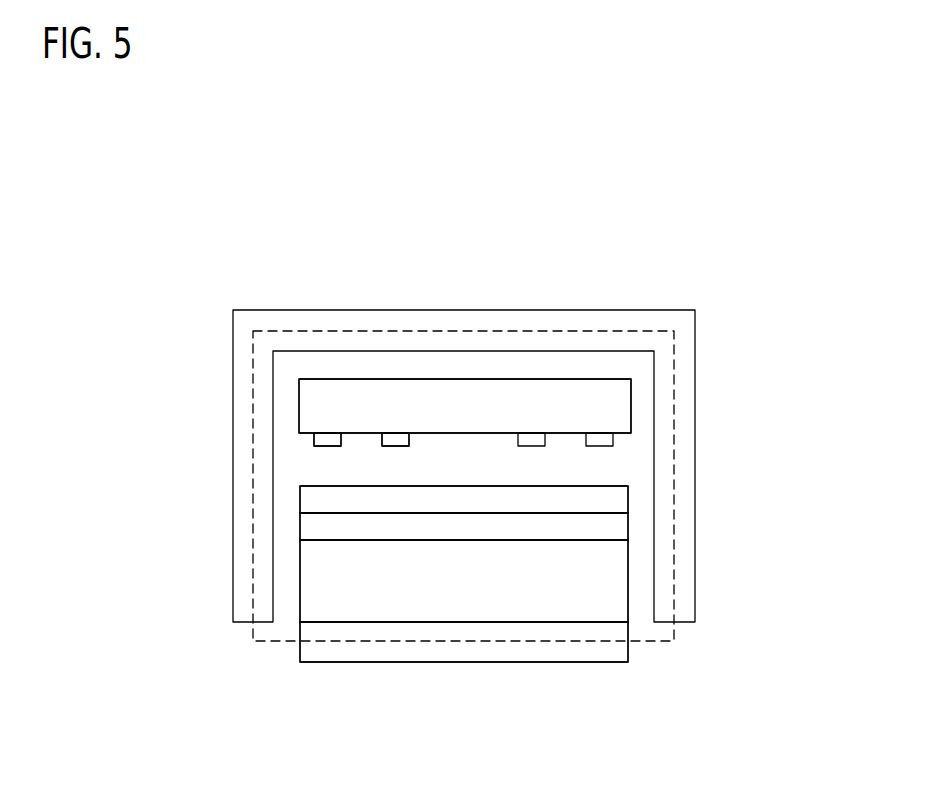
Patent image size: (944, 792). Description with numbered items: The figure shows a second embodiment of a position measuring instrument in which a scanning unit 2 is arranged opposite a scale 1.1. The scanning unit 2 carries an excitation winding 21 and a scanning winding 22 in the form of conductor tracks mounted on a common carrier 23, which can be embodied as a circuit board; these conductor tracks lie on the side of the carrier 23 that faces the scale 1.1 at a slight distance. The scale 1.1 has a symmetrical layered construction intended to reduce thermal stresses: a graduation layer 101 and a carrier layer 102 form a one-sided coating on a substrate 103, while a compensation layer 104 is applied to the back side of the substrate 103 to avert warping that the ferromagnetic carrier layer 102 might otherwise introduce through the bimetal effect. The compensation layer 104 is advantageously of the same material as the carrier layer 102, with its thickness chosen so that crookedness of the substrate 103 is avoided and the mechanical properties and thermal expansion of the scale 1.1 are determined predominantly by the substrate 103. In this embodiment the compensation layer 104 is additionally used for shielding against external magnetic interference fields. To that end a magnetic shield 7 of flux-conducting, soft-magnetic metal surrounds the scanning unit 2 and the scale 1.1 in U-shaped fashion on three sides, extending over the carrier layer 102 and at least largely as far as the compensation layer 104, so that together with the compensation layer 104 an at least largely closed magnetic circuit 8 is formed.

The scale 1.1 is at (290, 568).
The scanning unit 2 is at (288, 381).
The magnetic shield 7 is at (783, 295).
The magnetic circuit 8 is at (782, 363).
The excitation winding 21 is at (327, 437).
The scanning winding 22 is at (396, 437).
The carrier 23 is at (477, 397).
The graduation layer 101 is at (782, 465).
The carrier layer 102 is at (782, 521).
The substrate 103 is at (765, 594).
The compensation layer 104 is at (763, 656).